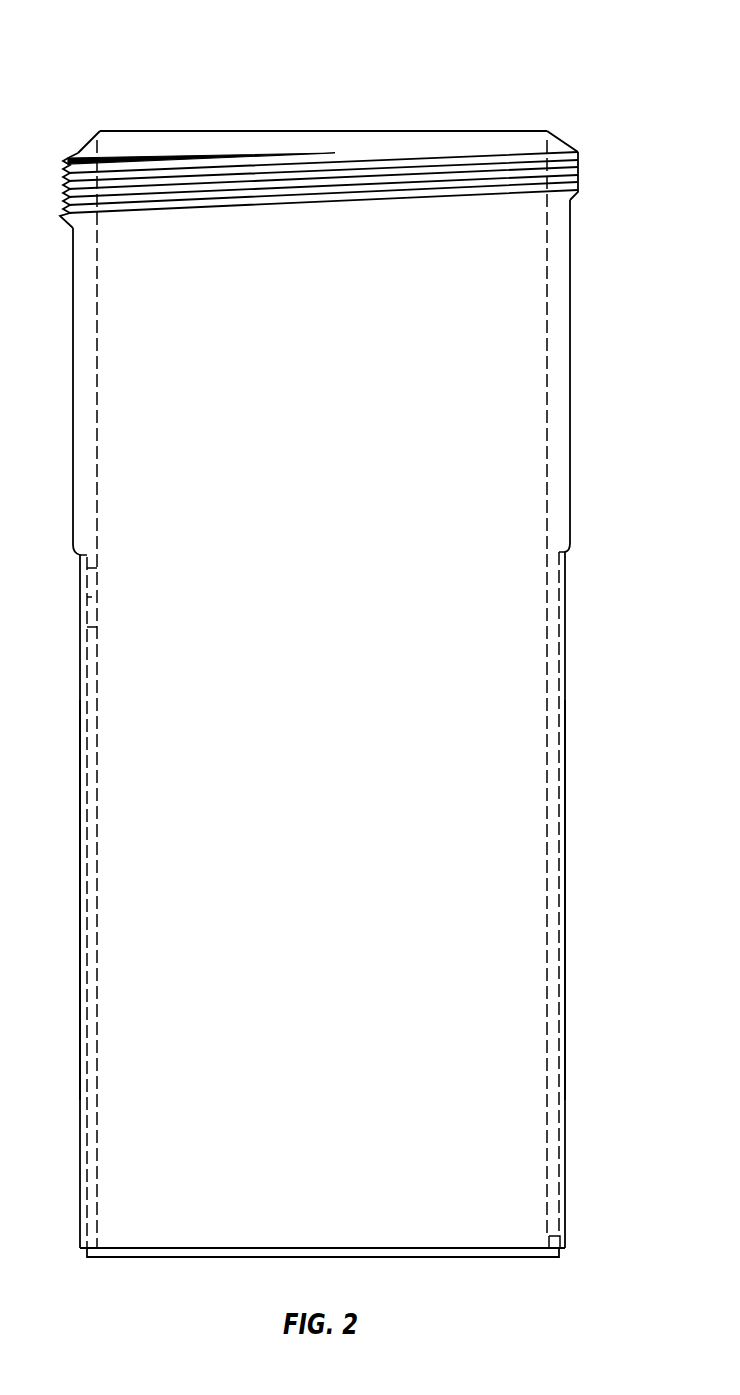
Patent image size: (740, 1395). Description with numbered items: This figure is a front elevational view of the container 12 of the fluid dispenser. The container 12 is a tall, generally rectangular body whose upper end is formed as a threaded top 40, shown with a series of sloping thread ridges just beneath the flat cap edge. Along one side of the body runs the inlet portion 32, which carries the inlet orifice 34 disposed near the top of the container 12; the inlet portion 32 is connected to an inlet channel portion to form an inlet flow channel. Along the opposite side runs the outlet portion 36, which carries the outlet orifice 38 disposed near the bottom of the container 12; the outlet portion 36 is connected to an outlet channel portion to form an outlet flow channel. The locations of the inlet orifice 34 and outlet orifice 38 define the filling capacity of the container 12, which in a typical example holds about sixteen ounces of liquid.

The container 12 is at (573, 52).
The inlet portion 32 is at (81, 918).
The inlet orifice 34 is at (88, 597).
The outlet portion 36 is at (566, 918).
The outlet orifice 38 is at (563, 1242).
The threaded top 40 is at (585, 169).